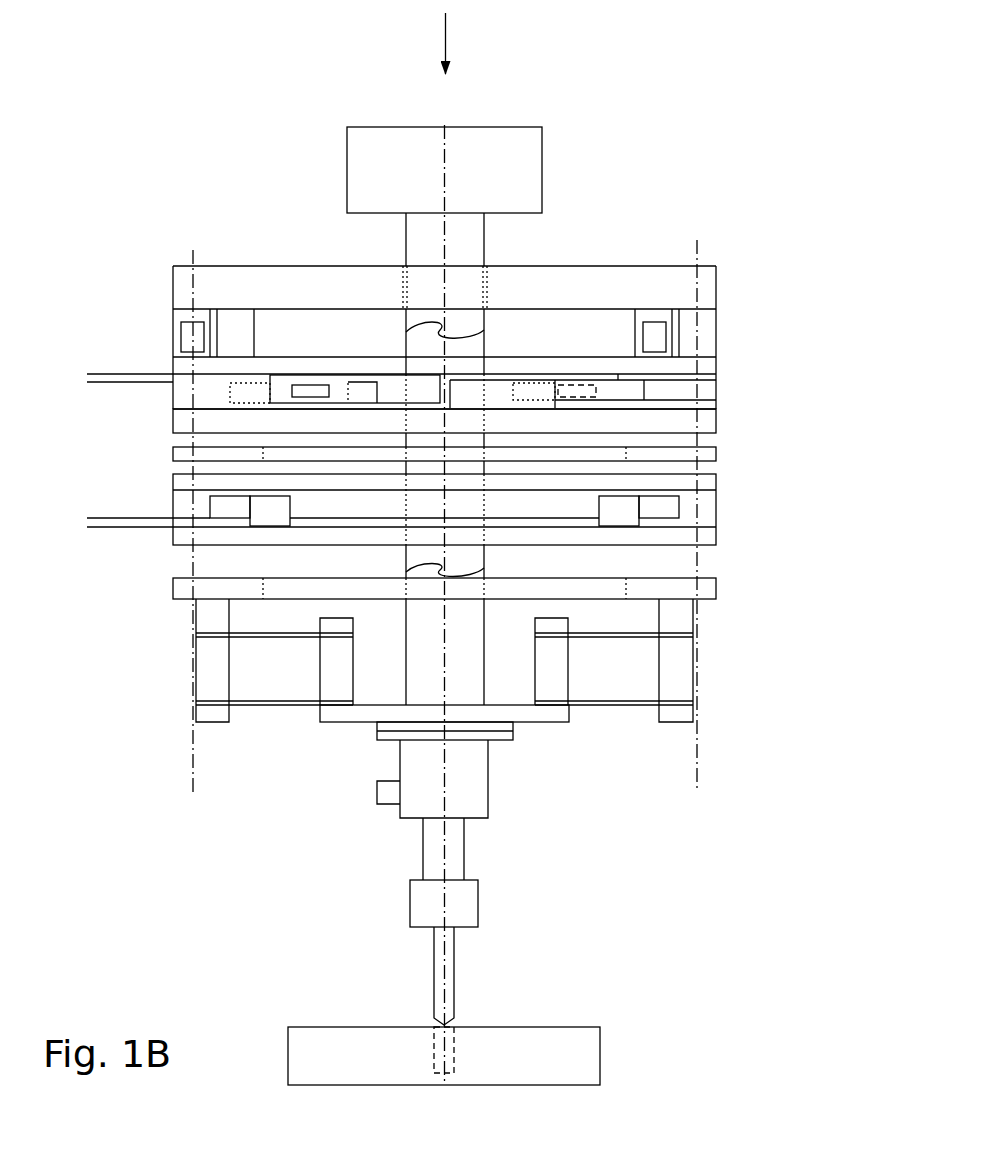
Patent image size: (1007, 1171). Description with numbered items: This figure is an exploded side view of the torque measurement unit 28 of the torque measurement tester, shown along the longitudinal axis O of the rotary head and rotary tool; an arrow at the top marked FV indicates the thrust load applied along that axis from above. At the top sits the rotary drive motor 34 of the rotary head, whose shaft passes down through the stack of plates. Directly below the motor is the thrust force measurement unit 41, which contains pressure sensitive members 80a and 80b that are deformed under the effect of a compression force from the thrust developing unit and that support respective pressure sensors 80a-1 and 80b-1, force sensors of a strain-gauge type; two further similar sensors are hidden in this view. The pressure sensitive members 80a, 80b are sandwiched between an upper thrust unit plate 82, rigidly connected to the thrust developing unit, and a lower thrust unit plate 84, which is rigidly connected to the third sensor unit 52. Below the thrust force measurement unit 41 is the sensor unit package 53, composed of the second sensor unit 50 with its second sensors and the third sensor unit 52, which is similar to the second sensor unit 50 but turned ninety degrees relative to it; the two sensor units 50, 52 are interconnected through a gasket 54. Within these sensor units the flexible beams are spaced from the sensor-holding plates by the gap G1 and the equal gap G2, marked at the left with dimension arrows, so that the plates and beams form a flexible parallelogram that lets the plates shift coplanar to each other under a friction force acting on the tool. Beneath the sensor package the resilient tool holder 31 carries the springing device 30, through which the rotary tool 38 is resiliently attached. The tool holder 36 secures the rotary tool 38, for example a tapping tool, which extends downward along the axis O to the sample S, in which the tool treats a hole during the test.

The rotary drive motor 34 is at (363, 168).
The upper thrust unit plate 82 is at (558, 272).
The lower thrust unit plate 84 is at (177, 363).
The pressure sensitive member 80a is at (232, 318).
The pressure sensor 80a-1 is at (187, 333).
The pressure sensitive member 80b is at (707, 322).
The pressure sensor 80b-1 is at (657, 328).
The thrust force measurement unit 41 is at (716, 379).
The torque measurement unit 28 is at (741, 386).
The gap G1 is at (103, 420).
The gap G2 is at (103, 562).
The third sensor unit 52 is at (721, 423).
The gasket 54 is at (173, 450).
The second sensor unit 50 is at (497, 517).
The sensor unit package 53 is at (463, 485).
The resilient tool holder 31 is at (728, 649).
The springing device 30 is at (259, 706).
The tool holder 36 is at (453, 905).
The rotary tool 38 is at (444, 968).
The sample S is at (550, 1040).
The vertical force FV is at (469, 40).
The longitudinal axis O is at (444, 125).